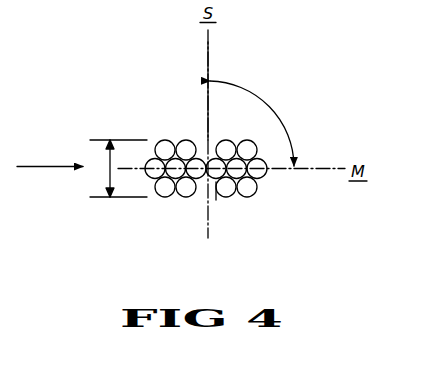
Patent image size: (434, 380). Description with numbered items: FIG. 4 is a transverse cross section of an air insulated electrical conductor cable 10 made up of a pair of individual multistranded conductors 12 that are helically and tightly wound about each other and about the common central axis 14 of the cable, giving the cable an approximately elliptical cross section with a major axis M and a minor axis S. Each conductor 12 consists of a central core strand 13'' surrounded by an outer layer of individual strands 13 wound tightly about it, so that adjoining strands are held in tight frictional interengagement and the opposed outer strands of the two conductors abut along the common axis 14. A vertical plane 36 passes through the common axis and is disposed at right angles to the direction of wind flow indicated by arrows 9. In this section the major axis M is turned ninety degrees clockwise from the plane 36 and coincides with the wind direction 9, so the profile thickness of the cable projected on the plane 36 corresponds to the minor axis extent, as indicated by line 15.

The arrows indicating wind flow direction 9 is at (45, 166).
The air insulated electrical conductor cable 10 is at (182, 184).
The multistranded conductor 12 is at (204, 161).
The outer layer strands 13 is at (219, 186).
The core strand 13'' is at (185, 205).
The common central axis of the cable 14 is at (216, 200).
The line indicating minor-axis profile thickness 15 is at (104, 166).
The vertical plane 36 is at (208, 63).